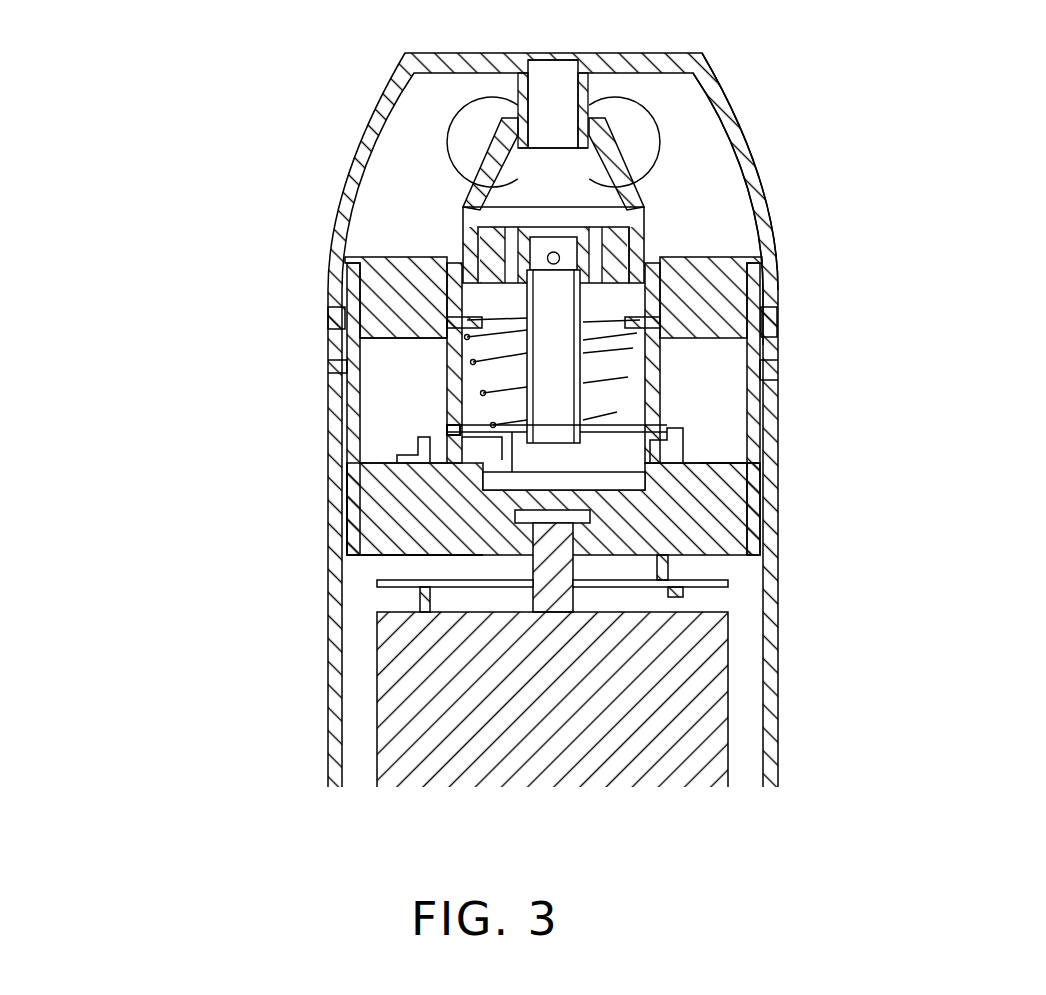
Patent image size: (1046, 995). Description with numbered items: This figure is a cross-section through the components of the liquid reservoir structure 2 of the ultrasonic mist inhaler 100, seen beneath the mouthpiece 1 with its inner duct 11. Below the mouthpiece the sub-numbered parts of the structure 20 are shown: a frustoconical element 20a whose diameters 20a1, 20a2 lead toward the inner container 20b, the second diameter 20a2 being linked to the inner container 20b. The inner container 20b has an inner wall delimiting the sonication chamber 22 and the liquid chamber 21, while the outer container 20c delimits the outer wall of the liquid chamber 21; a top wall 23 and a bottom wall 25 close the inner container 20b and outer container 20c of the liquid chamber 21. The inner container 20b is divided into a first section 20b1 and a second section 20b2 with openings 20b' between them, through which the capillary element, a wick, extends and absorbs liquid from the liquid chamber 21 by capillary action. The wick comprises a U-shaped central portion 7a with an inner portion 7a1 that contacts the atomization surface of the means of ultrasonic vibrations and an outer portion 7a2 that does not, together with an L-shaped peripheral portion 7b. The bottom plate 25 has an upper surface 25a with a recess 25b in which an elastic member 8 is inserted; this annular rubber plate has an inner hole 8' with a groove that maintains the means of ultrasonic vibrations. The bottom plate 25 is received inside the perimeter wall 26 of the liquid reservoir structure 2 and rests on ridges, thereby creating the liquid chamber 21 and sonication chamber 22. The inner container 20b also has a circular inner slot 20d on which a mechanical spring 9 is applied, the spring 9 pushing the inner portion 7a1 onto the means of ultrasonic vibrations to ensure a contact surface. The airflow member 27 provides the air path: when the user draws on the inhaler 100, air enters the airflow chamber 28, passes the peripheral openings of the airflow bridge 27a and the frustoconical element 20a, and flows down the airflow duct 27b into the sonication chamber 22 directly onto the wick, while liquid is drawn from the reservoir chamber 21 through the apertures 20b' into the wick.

The ultrasonic mist inhaler 100 is at (202, 82).
The mouthpiece 1 is at (324, 163).
The liquid reservoir structure 2 is at (284, 352).
The central portion 7a is at (340, 367).
The inner portion 7a1 is at (460, 488).
The outer portion 7a2 is at (616, 440).
The peripheral portion 7b is at (667, 458).
The elastic member 8 is at (628, 671).
The inner hole 8' is at (437, 572).
The mechanical spring 9 is at (545, 307).
The inner duct 11 is at (507, 73).
The cap 20 is at (540, 80).
The frustoconical element 20a is at (640, 193).
The cap outer surface 20a1 is at (722, 88).
The second diameter 20a2 is at (645, 228).
The inner container 20b is at (530, 363).
The openings 20b' is at (279, 461).
The first section 20b1 is at (437, 430).
The second section 20b2 is at (435, 473).
The outer container 20c is at (365, 466).
The circular inner slot 20d is at (435, 299).
The liquid chamber 21 is at (395, 452).
The sonication chamber 22 is at (772, 318).
The top wall 23 is at (328, 273).
The bottom wall 25 is at (763, 500).
The upper surface 25a is at (745, 465).
The recess 25b is at (380, 520).
The perimeter wall 26 is at (758, 520).
The nozzle 27 is at (466, 205).
The airflow bridge 27a is at (455, 320).
The airflow duct 27b is at (645, 262).
The airflow chamber 28 is at (427, 128).